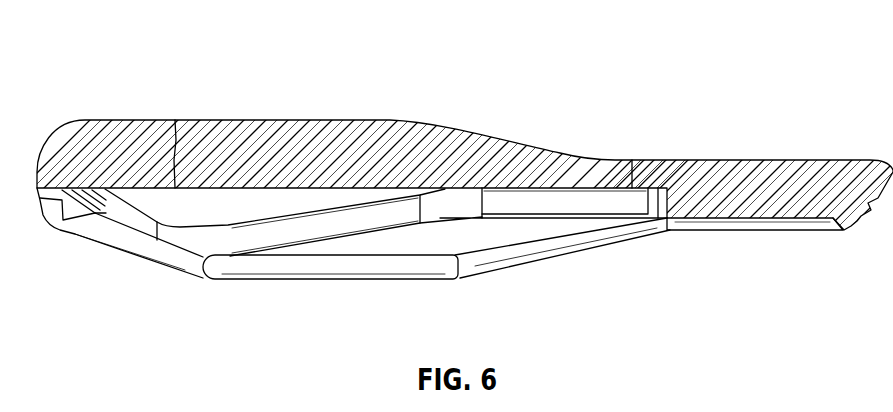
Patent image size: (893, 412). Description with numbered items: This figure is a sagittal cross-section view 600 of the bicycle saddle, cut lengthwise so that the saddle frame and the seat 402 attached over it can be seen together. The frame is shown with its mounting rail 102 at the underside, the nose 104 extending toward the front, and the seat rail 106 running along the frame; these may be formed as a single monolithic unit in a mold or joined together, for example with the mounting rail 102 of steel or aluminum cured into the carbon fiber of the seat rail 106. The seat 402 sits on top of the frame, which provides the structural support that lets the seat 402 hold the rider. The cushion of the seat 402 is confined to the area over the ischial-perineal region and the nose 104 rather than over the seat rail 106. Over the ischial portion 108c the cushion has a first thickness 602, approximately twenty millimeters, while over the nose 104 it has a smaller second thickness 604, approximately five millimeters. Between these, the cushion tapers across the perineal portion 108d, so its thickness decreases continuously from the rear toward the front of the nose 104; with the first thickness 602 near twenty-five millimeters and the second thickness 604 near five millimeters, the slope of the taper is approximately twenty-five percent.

The sagittal cross-section view 600 is at (764, 64).
The seat 402 is at (403, 119).
The first thickness 602 is at (177, 150).
The second thickness 604 is at (633, 180).
The mounting rail 102 is at (294, 282).
The nose 104 is at (745, 214).
The seat rail 106 is at (573, 192).
The ischial portion 108c is at (349, 210).
The perineal portion 108d is at (503, 199).